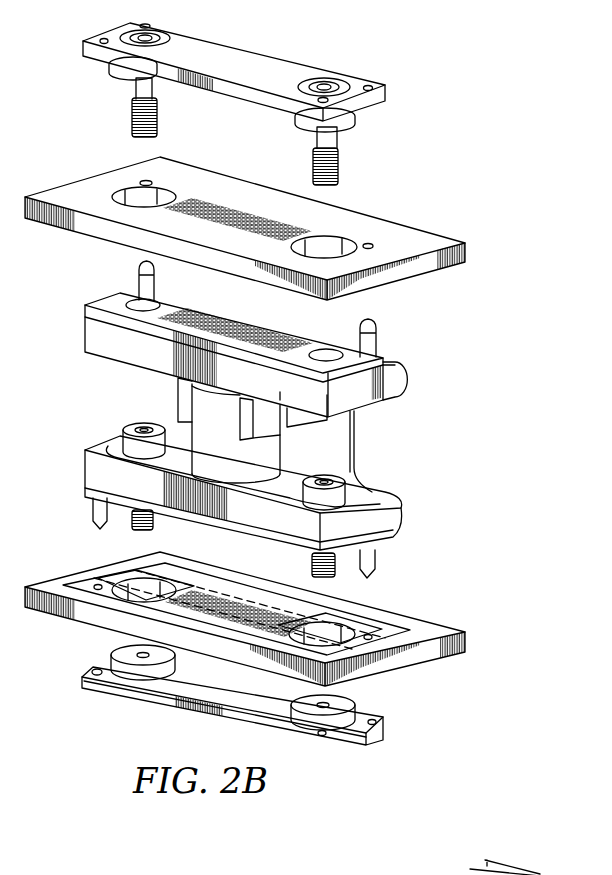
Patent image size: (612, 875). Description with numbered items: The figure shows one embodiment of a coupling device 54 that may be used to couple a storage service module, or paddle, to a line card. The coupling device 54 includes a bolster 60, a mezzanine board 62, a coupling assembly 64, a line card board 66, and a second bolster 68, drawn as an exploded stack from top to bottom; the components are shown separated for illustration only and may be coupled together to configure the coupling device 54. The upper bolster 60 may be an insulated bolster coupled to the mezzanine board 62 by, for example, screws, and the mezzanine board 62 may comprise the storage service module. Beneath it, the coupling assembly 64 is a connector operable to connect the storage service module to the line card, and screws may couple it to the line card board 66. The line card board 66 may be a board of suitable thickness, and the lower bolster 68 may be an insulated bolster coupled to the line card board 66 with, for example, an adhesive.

The coupling device 54 is at (472, 101).
The bolster 60 is at (260, 58).
The mezzanine board 62 is at (398, 230).
The coupling assembly 64 is at (398, 508).
The line card board 66 is at (405, 662).
The bolster 68 is at (126, 695).